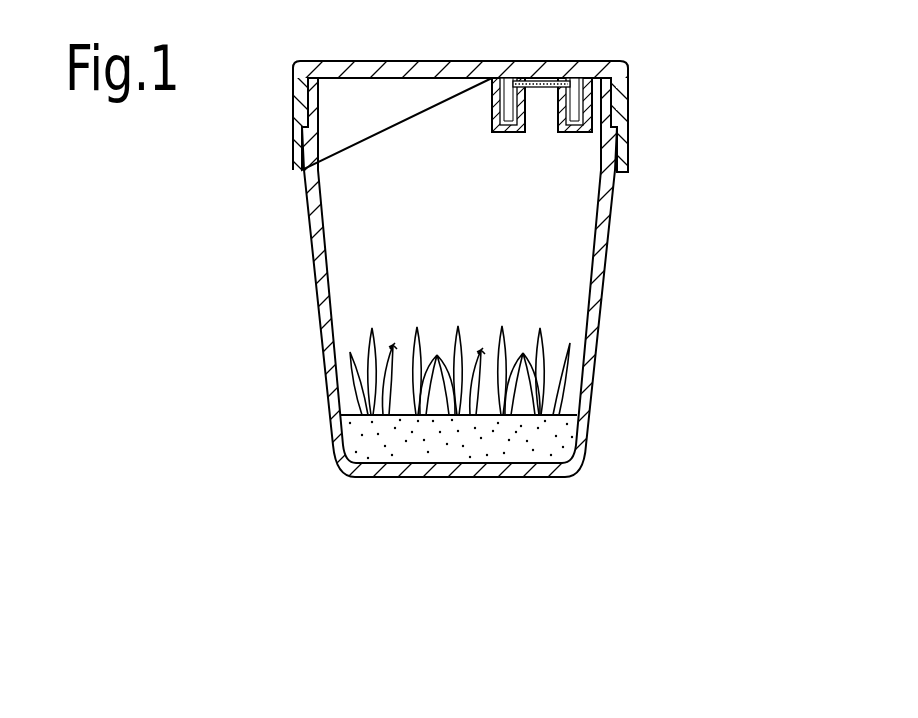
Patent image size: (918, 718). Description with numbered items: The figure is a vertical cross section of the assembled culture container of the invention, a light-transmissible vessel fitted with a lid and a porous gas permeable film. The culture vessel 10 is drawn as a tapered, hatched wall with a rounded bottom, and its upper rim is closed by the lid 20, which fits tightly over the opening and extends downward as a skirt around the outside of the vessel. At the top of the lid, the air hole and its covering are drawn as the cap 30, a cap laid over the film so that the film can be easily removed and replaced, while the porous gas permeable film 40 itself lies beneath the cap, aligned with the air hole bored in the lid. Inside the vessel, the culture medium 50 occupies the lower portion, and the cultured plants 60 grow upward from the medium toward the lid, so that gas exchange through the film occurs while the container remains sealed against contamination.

The pot body 10 is at (645, 208).
The lid 20 is at (648, 122).
The vent channel 30 is at (570, 56).
The filter plug 40 is at (574, 84).
The soil / growing medium 50 is at (556, 440).
The plants / grass 60 is at (570, 331).